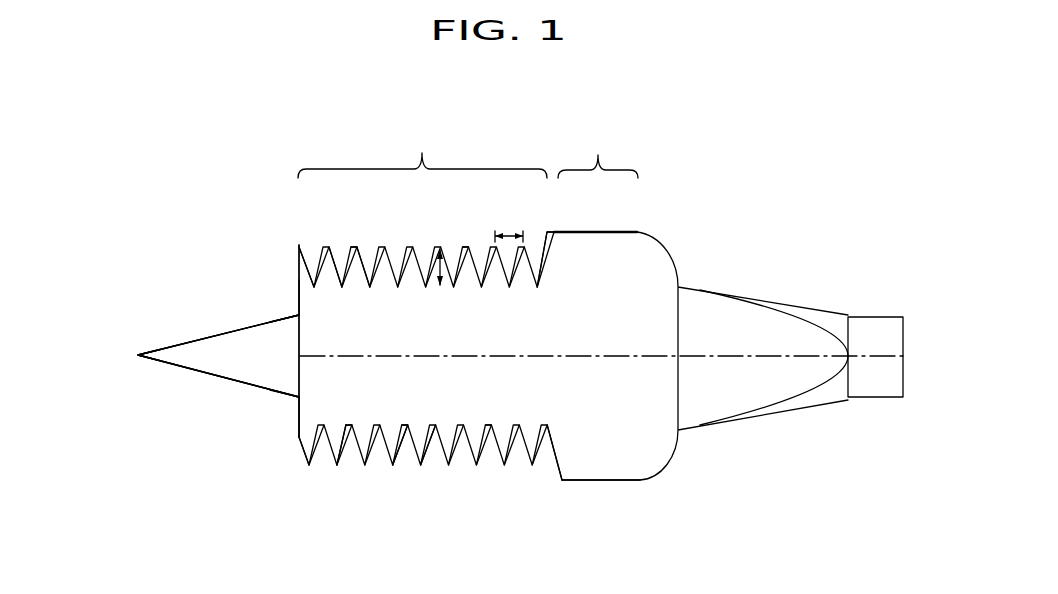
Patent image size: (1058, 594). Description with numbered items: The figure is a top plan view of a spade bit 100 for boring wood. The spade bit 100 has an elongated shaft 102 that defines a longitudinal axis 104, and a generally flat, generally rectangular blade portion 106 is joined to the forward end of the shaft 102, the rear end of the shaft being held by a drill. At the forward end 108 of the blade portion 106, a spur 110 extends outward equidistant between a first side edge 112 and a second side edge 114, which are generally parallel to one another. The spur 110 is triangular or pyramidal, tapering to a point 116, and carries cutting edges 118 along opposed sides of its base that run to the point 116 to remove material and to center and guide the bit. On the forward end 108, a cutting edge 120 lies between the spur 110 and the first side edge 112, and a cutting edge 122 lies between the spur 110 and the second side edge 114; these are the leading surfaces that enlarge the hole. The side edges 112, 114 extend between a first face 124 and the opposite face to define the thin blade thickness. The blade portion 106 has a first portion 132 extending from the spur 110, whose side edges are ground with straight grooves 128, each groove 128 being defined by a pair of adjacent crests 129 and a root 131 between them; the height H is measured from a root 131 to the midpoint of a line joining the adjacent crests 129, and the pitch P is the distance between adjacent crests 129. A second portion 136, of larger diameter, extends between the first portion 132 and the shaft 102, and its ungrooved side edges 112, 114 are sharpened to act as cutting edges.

The spade bit 100 is at (729, 232).
The elongated shaft 102 is at (875, 318).
The longitudinal axis 104 is at (540, 356).
The blade portion 106 is at (608, 269).
The forward end 108 is at (298, 268).
The spur 110 is at (196, 362).
The first side edge 112 is at (299, 247).
The second side edge 114 is at (312, 468).
The point 116 is at (143, 350).
The cutting edges 118 is at (210, 333).
The cutting edge 120 is at (298, 295).
The cutting edge 122 is at (297, 410).
The first face 124 is at (502, 334).
The grooves 128 is at (367, 248).
The crests 129 is at (332, 265).
The root 131 is at (340, 282).
The first portion 132 is at (422, 148).
The second portion 136 is at (598, 148).
The height of the grooves H is at (440, 252).
The pitch of the grooves P is at (512, 236).